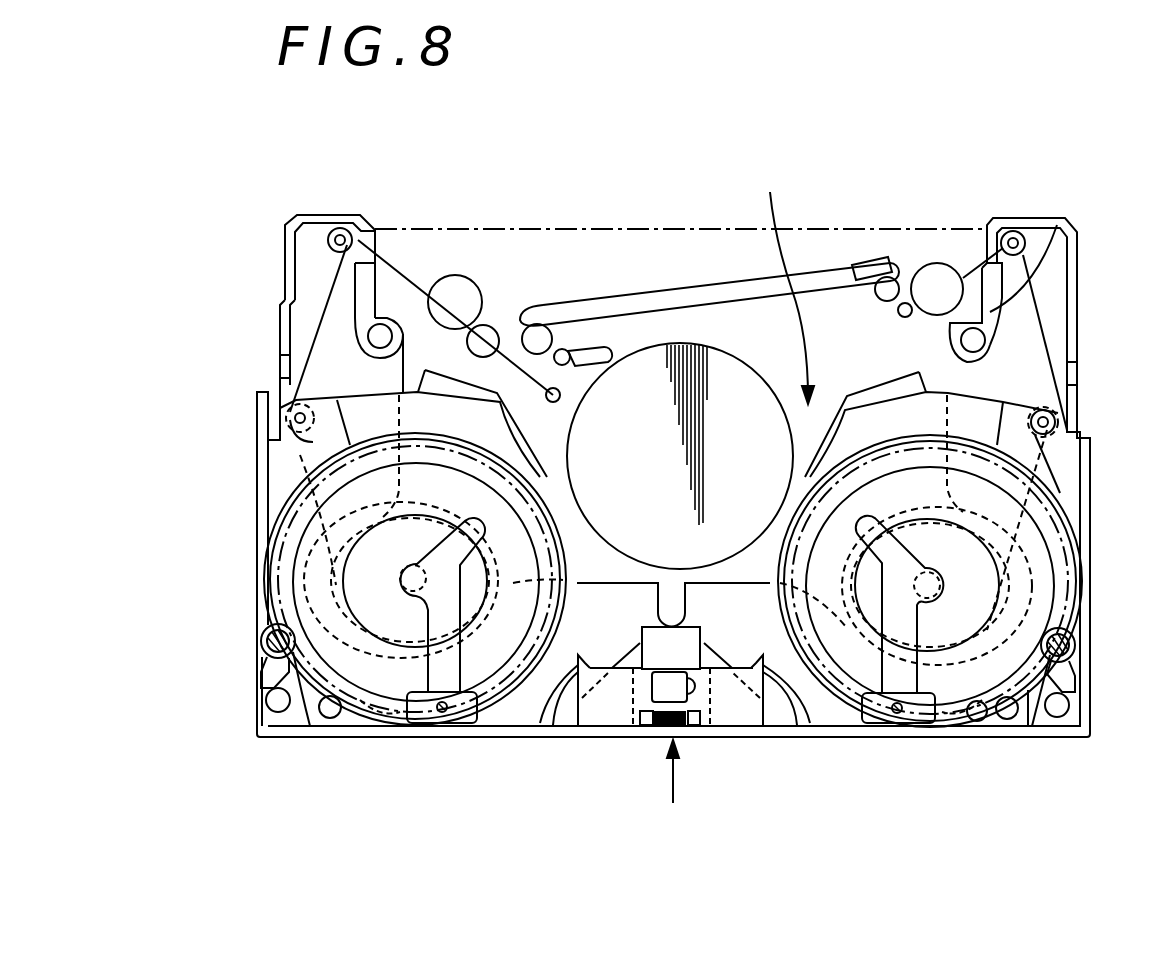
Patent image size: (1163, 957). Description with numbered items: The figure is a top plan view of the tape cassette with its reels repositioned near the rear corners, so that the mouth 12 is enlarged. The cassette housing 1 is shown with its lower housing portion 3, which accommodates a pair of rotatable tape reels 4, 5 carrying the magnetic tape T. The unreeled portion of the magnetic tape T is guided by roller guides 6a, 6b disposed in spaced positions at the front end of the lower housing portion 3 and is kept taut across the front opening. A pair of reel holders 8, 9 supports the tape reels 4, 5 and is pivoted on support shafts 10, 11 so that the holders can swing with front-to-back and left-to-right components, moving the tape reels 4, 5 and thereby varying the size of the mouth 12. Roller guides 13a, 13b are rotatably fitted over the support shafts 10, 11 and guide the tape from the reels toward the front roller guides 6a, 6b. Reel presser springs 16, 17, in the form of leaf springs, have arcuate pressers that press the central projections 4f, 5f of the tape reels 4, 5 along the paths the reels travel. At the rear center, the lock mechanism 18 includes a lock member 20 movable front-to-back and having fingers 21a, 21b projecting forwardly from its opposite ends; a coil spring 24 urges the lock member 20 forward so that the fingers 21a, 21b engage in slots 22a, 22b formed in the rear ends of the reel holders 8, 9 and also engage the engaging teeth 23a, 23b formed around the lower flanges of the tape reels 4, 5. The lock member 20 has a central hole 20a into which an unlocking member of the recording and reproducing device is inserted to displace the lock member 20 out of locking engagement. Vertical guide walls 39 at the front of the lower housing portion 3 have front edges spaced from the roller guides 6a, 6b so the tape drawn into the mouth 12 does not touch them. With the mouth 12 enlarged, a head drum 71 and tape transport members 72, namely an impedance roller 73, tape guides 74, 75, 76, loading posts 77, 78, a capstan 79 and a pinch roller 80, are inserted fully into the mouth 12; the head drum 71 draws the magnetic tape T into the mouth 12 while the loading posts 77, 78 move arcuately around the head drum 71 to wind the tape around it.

The cassette housing 1 is at (1092, 727).
The lower housing portion 3 is at (250, 704).
The tape reel 4 is at (292, 640).
The tape reel 5 is at (1028, 712).
The central projection 4f is at (412, 566).
The central projection 5f is at (930, 574).
The roller guide 6a is at (364, 285).
The roller guide 6b is at (998, 303).
The reel holder 8 is at (362, 395).
The reel holder 9 is at (997, 392).
The support shaft 10 is at (292, 420).
The support shaft 11 is at (1058, 424).
The mouth 12 is at (784, 282).
The roller guide 13a is at (299, 433).
The roller guide 13b is at (1063, 440).
The reel presser spring 16 is at (428, 616).
The reel presser spring 17 is at (917, 616).
The lock mechanism 18 is at (670, 788).
The lock member 20 is at (603, 716).
The central hole 20a is at (723, 715).
The finger 21a is at (565, 712).
The finger 21b is at (772, 718).
The slot 22a is at (467, 716).
The slot 22b is at (878, 716).
The engaging teeth 23a is at (370, 716).
The engaging teeth 23b is at (972, 716).
The coil spring 24 is at (657, 716).
The guide wall 39 is at (333, 230).
The head drum 71 is at (655, 344).
The tape transport members 72 is at (488, 325).
The impedance roller 73 is at (440, 283).
The tape guide 74 is at (488, 328).
The tape guide 75 is at (547, 391).
The tape guide 76 is at (872, 264).
The loading post 77 is at (577, 348).
The loading post 78 is at (543, 326).
The capstan 79 is at (876, 283).
The pinch roller 80 is at (938, 263).
The magnetic tape T is at (736, 292).